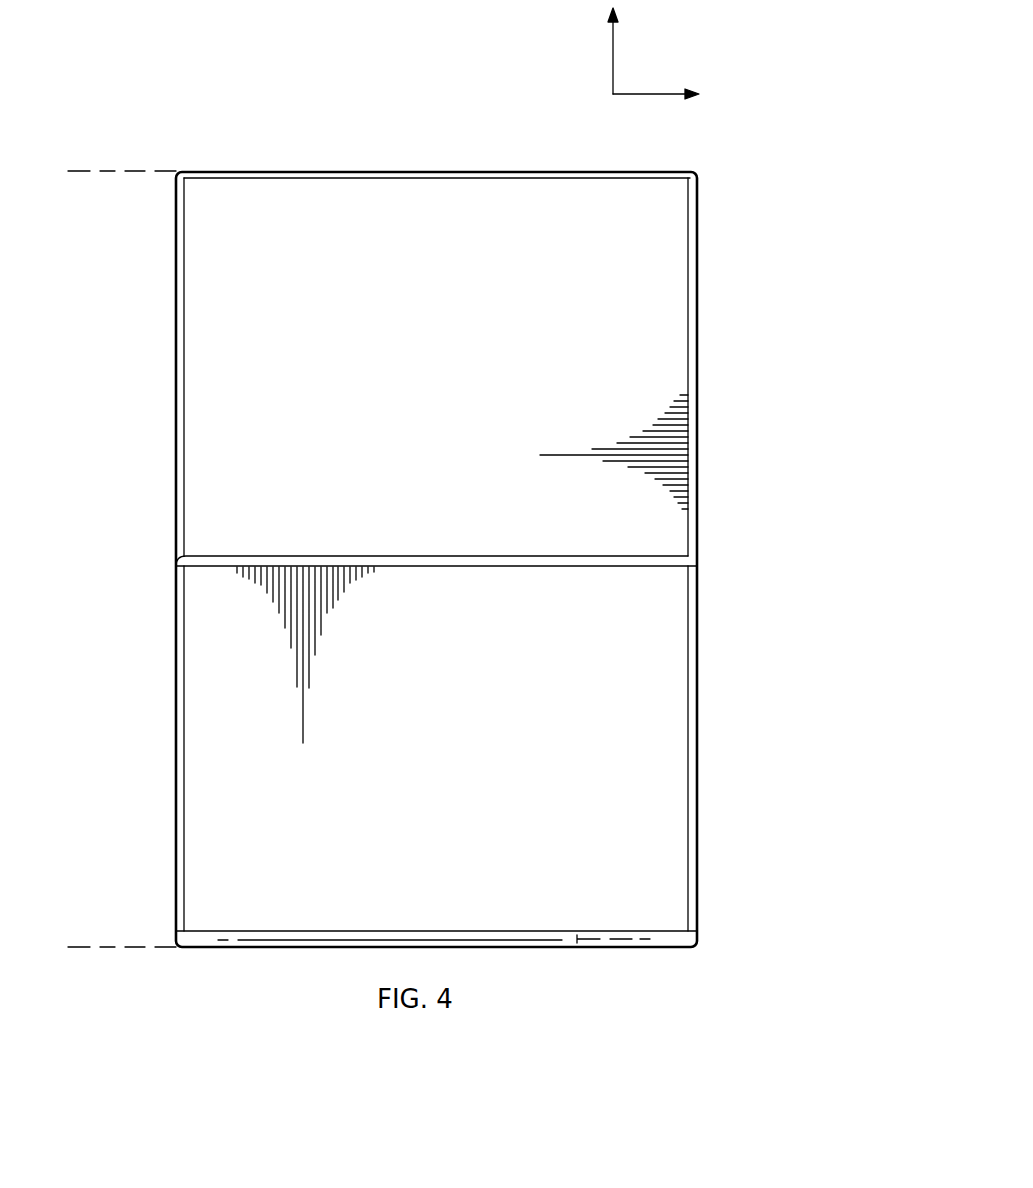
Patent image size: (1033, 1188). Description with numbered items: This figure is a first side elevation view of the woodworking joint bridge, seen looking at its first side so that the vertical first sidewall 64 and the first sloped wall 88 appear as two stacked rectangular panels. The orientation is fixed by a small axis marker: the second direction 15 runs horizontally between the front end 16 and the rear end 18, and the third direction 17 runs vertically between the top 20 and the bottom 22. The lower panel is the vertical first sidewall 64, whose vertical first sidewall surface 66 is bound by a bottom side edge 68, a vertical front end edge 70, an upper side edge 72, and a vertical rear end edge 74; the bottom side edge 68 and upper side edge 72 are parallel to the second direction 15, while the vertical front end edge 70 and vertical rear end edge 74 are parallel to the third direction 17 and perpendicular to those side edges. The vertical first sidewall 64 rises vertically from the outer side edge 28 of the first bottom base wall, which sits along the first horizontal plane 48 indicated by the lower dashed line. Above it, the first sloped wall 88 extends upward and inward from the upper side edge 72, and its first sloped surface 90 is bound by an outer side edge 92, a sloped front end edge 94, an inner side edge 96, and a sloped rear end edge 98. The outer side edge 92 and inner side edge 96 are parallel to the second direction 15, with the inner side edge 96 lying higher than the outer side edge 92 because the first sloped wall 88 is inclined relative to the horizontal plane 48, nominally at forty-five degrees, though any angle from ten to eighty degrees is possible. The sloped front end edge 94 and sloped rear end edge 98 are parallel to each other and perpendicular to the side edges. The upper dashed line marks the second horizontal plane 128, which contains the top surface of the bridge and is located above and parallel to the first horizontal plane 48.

The second direction 15 is at (648, 94).
The front end 16 is at (755, 580).
The third direction 17 is at (613, 60).
The rear end 18 is at (116, 580).
The top 20 is at (338, 125).
The bottom 22 is at (300, 968).
The outer side edge 28 is at (577, 941).
The first horizontal plane 48 is at (108, 948).
The vertical first sidewall 64 is at (665, 849).
The vertical first sidewall surface 66 is at (423, 763).
The bottom side edge 68 is at (470, 931).
The vertical front end edge 70 is at (688, 748).
The upper side edge 72 is at (470, 567).
The vertical rear end edge 74 is at (184, 748).
The first sloped wall 88 is at (665, 284).
The first sloped surface 90 is at (423, 380).
The outer side edge 92 is at (363, 556).
The sloped front end edge 94 is at (688, 365).
The inner side edge 96 is at (520, 178).
The sloped rear end edge 98 is at (184, 365).
The second horizontal plane 128 is at (108, 171).